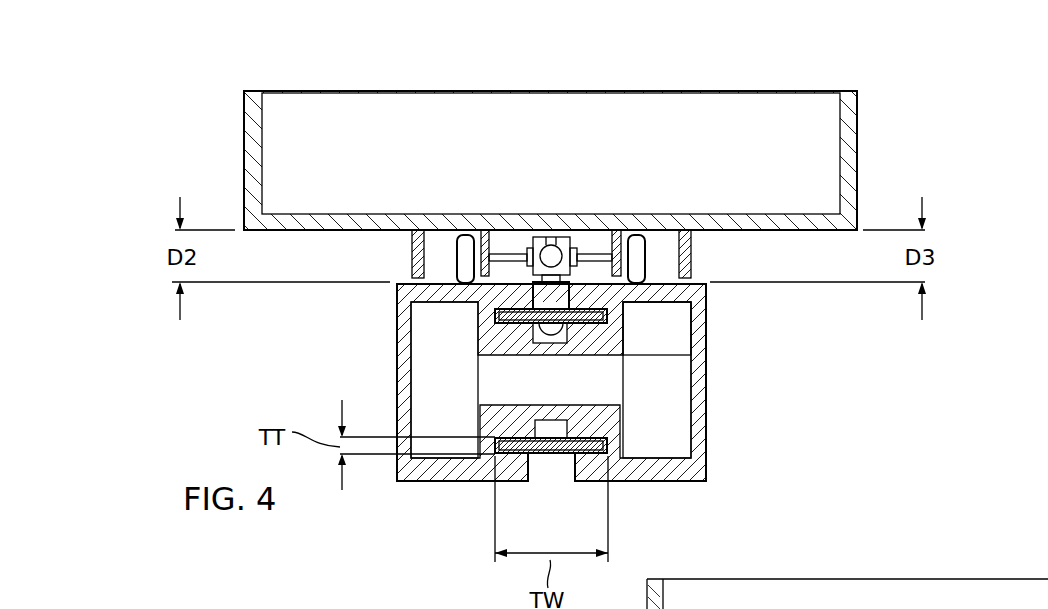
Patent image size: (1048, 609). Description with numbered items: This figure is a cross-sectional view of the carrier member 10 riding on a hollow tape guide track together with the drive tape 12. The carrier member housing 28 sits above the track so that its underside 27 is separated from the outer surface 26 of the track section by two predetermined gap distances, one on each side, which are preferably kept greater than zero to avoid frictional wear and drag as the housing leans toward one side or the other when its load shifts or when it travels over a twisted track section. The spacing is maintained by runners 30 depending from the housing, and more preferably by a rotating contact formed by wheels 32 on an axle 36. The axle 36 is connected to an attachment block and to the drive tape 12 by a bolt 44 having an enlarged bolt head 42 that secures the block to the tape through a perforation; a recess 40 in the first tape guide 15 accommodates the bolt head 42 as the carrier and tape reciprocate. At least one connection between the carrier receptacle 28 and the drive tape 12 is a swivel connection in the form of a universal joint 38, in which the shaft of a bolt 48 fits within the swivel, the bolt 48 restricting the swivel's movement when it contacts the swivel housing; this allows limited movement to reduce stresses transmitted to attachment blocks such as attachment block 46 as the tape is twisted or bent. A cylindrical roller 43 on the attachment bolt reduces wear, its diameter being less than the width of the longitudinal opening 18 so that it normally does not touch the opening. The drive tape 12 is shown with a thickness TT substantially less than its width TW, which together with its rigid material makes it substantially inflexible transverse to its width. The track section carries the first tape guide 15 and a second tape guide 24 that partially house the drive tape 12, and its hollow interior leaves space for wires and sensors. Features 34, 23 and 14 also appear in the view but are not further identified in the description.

The carrier member 10 is at (882, 97).
The carrier member housing 28 is at (860, 144).
The underside of carrier member housing 27 is at (807, 232).
The runners 30 is at (410, 252).
The wheels 32 is at (458, 283).
The bracket 34 is at (484, 232).
The axle 36 is at (505, 252).
The universal joint 38 is at (570, 237).
The attachment block 46 is at (590, 258).
The bolt 48 is at (550, 237).
The carriage body 23 is at (707, 385).
The outer surface of tape guide track section 26 is at (700, 283).
The left chamber 14 is at (495, 337).
The first tape guide 15 is at (612, 333).
The bolt 44 is at (624, 303).
The roller 43 is at (528, 296).
The drive tape 12 is at (580, 323).
The recess 40 is at (540, 337).
The enlarged bolt head 42 is at (553, 344).
The second tape guide 24 is at (472, 470).
The longitudinal opening 18 is at (556, 470).